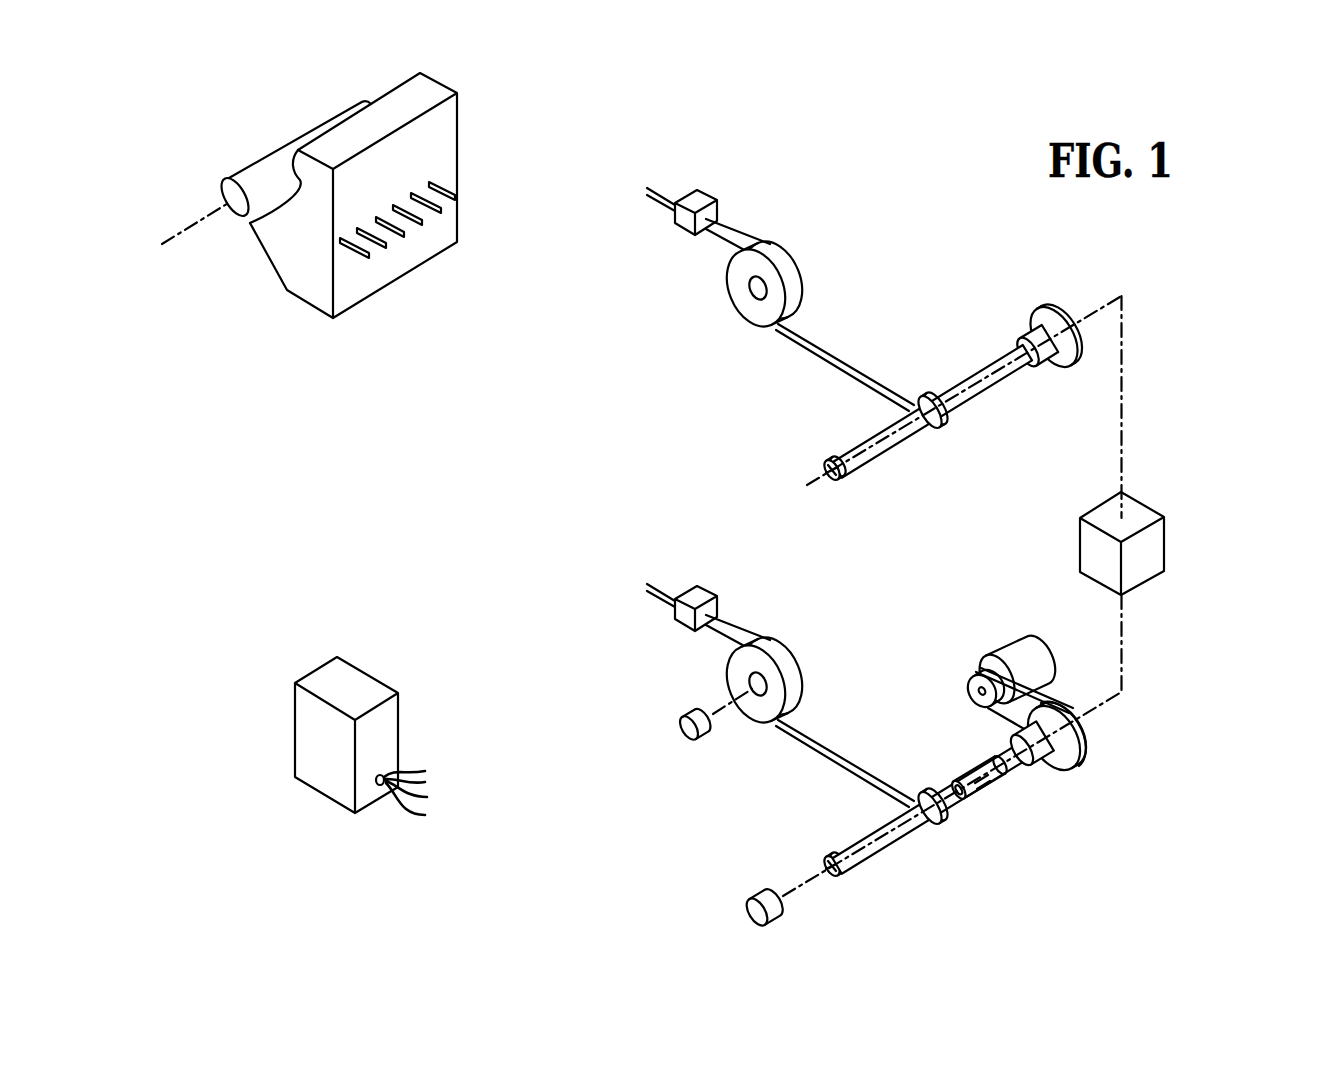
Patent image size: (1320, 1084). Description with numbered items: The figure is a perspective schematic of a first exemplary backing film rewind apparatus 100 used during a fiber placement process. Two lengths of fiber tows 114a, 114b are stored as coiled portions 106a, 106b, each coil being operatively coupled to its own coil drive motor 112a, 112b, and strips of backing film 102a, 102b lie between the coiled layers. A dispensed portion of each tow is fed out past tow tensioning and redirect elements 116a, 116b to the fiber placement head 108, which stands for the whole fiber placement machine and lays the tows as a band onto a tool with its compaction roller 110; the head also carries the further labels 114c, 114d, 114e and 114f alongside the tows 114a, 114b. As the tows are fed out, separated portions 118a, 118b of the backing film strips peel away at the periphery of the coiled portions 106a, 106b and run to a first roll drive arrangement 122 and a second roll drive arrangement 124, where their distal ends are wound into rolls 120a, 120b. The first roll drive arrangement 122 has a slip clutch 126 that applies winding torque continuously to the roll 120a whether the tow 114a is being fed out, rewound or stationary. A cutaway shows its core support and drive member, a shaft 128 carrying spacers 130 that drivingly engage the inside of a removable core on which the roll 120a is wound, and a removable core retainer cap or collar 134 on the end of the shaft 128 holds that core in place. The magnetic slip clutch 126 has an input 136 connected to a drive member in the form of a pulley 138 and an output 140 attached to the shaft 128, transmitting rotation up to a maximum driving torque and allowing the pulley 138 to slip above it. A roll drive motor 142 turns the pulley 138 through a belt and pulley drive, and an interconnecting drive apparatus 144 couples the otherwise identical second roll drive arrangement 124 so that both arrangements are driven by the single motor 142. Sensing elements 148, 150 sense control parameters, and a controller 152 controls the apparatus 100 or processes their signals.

The backing film rewind apparatus 100 is at (1148, 362).
The strip of backing film 102a is at (838, 757).
The strip of backing film 102b is at (840, 361).
The coiled portion of fiber tow 106a is at (800, 718).
The coiled portion of fiber tow 106b is at (800, 322).
The fiber placement head 108 is at (300, 272).
The compaction roller 110 is at (235, 206).
The fiber tow 114a is at (367, 255).
The fiber tow 114b is at (387, 244).
The fiber slot 114c is at (406, 232).
The fiber slot 114d is at (423, 221).
The fiber slot 114e is at (440, 210).
The fiber slot 114f is at (456, 191).
The tow tensioning and redirect element 116a is at (693, 593).
The tow tensioning and redirect element 116b is at (693, 197).
The coil drive motor 112a is at (780, 664).
The coil drive motor 112b is at (780, 268).
The separated portion of backing film strip 118a is at (885, 784).
The separated portion of backing film strip 118b is at (886, 388).
The roll of separated backing film 120a is at (943, 820).
The roll of separated backing film 120b is at (942, 424).
The first roll drive arrangement 122 is at (988, 818).
The second roll drive arrangement 124 is at (988, 418).
The slip clutch 126 is at (1050, 775).
The shaft 128 is at (995, 772).
The spacers 130 is at (982, 784).
The removable core retainer cap 134 is at (836, 880).
The clutch input 136 is at (1083, 731).
The pulley 138 is at (1060, 718).
The clutch output 140 is at (1065, 772).
The roll drive motor 142 is at (1030, 663).
The interconnecting drive apparatus 144 is at (1155, 550).
The sensing element 148 is at (687, 722).
The sensing element 150 is at (773, 908).
The controller 152 is at (387, 735).